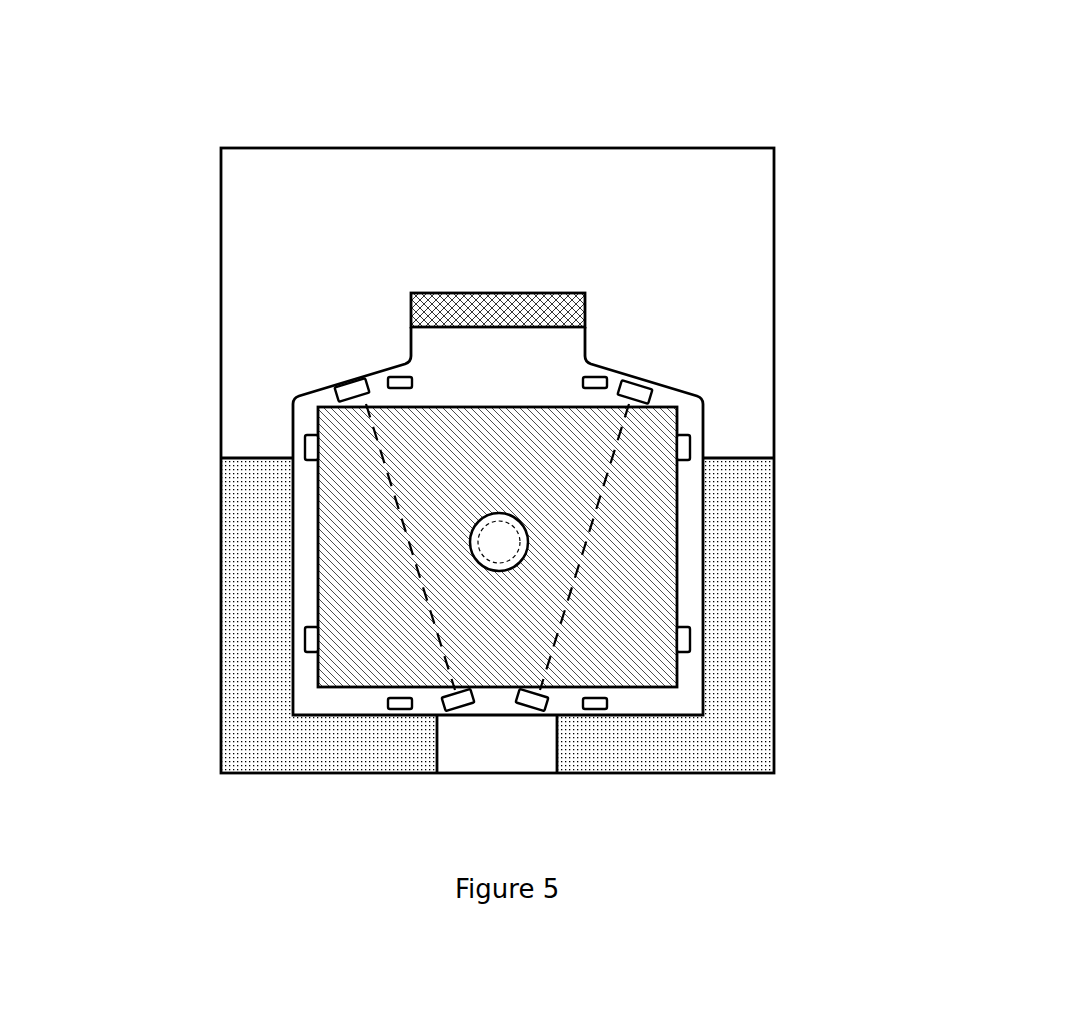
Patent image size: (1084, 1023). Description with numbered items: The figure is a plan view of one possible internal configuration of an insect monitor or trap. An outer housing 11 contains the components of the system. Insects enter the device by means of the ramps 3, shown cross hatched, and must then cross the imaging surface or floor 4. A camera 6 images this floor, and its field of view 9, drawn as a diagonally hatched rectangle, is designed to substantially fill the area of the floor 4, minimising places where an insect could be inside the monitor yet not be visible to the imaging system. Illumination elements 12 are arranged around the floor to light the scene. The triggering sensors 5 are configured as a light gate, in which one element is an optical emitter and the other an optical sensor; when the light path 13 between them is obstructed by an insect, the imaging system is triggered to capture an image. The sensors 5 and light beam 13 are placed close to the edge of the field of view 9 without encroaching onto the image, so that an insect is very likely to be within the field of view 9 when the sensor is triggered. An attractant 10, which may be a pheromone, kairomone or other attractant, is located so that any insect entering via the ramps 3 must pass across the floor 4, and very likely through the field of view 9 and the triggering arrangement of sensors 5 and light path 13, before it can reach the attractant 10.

The ramps 3 is at (748, 548).
The imaging surface or floor 4 is at (360, 702).
The triggering sensors 5 is at (350, 388).
The camera 6 is at (491, 541).
The field of view 9 is at (670, 423).
The attractant 10 is at (570, 306).
The outer housing 11 is at (218, 187).
The illumination elements 12 is at (612, 378).
The light path 13 is at (427, 603).